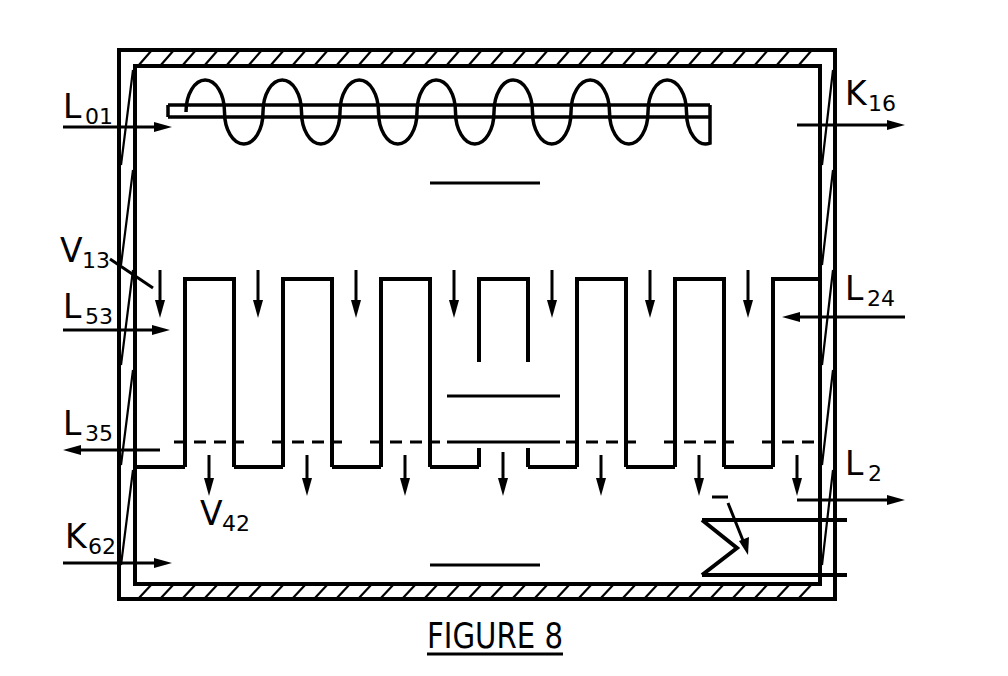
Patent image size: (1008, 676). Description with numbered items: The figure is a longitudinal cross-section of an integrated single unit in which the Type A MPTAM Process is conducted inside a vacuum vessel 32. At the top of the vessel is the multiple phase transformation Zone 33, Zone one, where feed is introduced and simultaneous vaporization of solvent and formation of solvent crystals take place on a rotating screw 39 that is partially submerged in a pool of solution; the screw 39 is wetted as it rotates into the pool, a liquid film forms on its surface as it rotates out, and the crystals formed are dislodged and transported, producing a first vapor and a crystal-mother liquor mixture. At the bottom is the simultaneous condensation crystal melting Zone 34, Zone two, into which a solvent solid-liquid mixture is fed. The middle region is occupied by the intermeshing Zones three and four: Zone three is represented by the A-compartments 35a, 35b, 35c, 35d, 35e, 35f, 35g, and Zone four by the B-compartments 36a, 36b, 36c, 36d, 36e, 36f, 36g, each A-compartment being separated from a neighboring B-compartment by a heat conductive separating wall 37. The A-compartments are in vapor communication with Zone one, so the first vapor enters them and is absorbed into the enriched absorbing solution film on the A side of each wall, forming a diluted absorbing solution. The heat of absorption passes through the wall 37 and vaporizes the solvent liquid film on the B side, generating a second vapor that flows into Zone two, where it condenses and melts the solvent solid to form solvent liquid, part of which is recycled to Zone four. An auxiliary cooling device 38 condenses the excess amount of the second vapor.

The vacuum vessel 32 is at (726, 57).
The multiple phase transformation Zone 33 is at (772, 104).
The simultaneous condensation crystal melting Zone 34 is at (345, 558).
The A-compartment A1 35a is at (165, 309).
The A-compartment A2 35b is at (263, 302).
The A-compartment A3 35c is at (360, 302).
The A-compartment A4 35d is at (459, 302).
The A-compartment A5 35e is at (557, 302).
The A-compartment A6 35f is at (653, 302).
The A-compartment A7 35g is at (754, 302).
The B-compartment B1 36a is at (207, 297).
The B-compartment B2 36b is at (305, 297).
The B-compartment B3 36c is at (403, 297).
The B-compartment B4 36d is at (501, 297).
The B-compartment B5 36e is at (599, 297).
The B-compartment B6 36f is at (697, 297).
The B-compartment B7 36g is at (807, 300).
The heat conductive separating wall 37 is at (690, 275).
The auxiliary cooling device 38 is at (718, 532).
The screw conveyor 39 is at (593, 92).